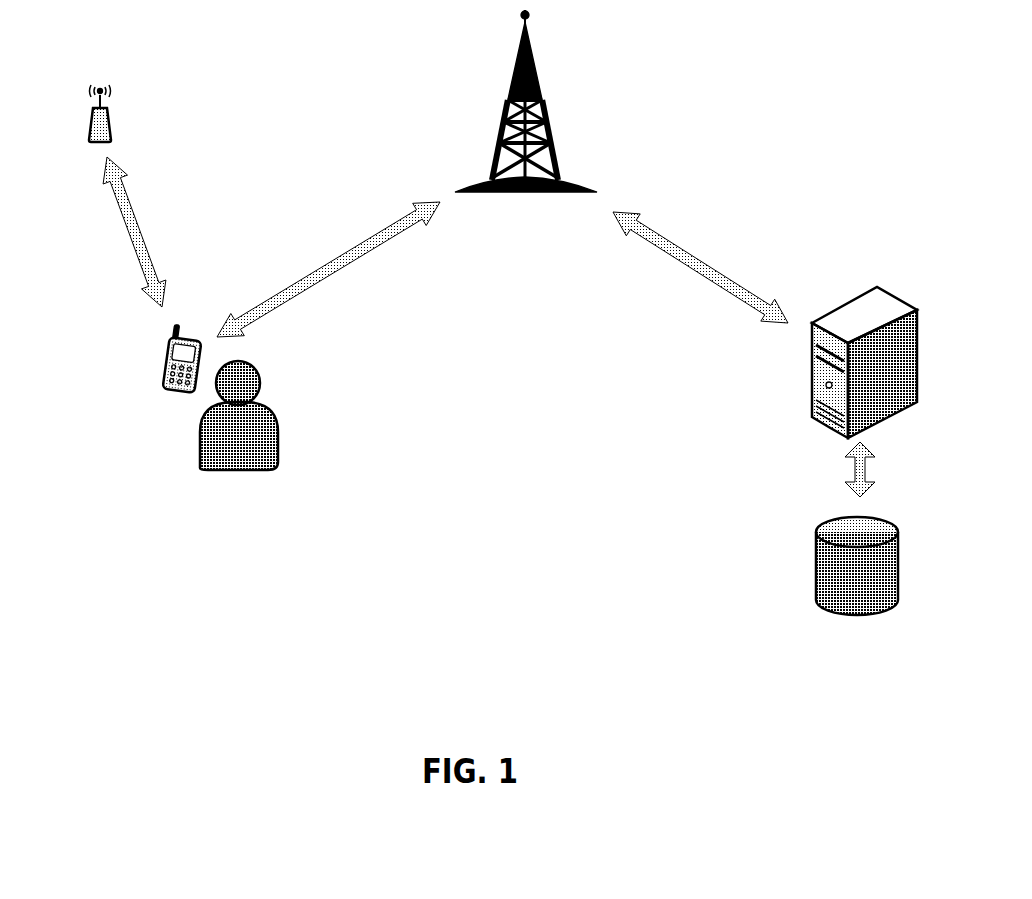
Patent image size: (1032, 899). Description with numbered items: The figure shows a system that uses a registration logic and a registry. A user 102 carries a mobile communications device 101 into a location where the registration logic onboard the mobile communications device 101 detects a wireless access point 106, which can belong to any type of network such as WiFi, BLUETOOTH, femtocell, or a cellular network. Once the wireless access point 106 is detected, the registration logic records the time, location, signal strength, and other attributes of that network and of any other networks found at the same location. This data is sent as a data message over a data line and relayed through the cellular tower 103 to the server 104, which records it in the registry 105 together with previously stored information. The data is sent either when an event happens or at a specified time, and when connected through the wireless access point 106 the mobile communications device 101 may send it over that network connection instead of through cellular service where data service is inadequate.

The mobile communications device 101 is at (119, 388).
The user 102 is at (315, 405).
The cellular tower 103 is at (590, 101).
The server 104 is at (761, 365).
The registry 105 is at (756, 556).
The wireless access point 106 is at (177, 95).